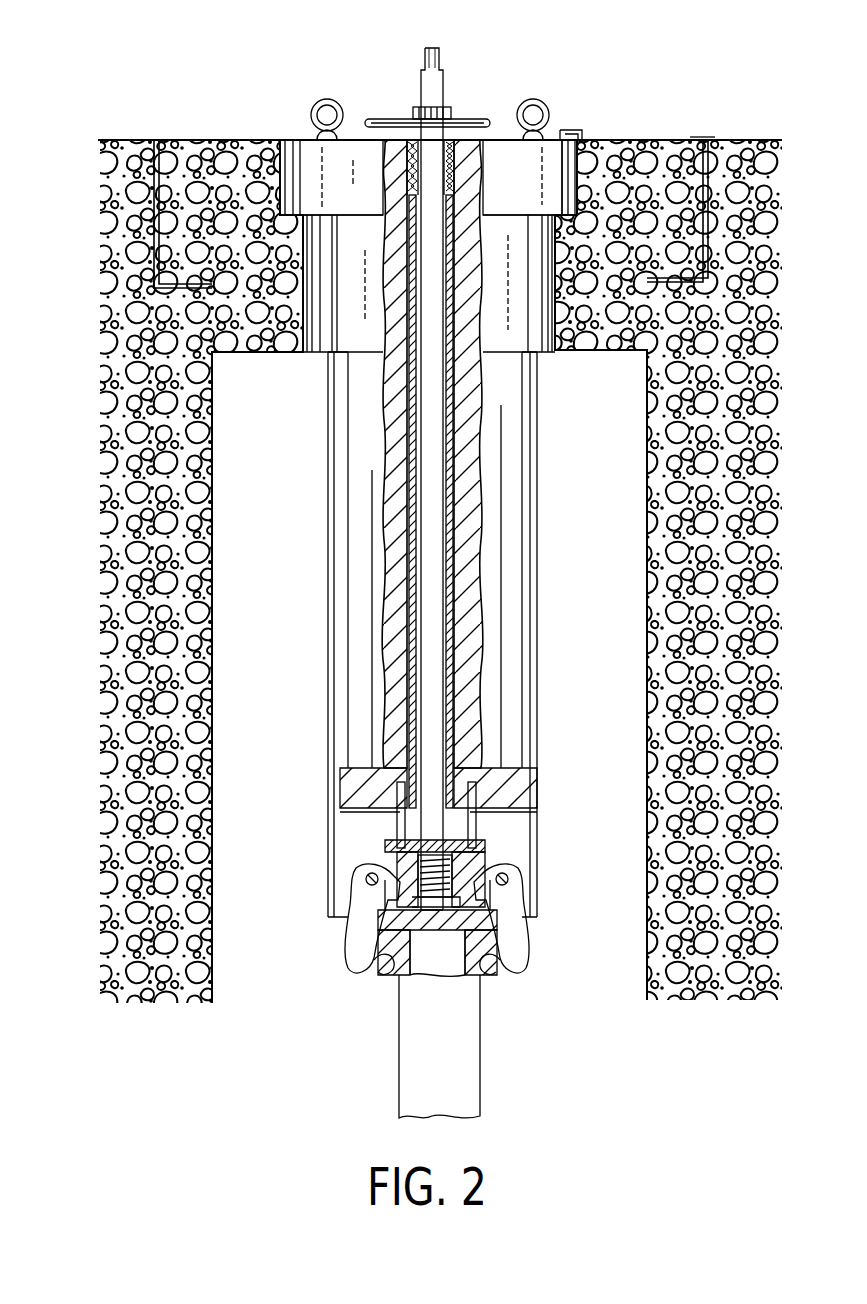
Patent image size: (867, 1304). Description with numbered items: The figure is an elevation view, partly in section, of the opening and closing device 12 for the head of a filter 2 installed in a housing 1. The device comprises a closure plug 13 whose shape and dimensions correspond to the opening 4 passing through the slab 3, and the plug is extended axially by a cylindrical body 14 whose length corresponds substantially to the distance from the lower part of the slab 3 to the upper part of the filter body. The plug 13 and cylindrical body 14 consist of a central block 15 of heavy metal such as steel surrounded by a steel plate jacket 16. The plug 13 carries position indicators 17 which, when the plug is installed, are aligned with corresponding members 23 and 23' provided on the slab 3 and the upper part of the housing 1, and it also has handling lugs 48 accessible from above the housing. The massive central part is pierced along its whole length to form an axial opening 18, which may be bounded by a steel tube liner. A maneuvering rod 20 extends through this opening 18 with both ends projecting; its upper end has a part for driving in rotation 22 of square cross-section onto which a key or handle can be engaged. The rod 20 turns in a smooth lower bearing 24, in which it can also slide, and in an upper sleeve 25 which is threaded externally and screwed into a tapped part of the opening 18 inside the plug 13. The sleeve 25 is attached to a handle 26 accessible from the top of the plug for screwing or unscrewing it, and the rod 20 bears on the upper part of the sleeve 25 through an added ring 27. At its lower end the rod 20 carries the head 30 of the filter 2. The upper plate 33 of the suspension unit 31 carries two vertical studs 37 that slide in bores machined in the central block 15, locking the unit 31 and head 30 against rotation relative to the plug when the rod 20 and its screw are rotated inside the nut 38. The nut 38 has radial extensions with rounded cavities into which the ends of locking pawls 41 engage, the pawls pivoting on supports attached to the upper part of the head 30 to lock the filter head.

The housing 1 is at (652, 470).
The filter 2 is at (473, 1085).
The slab 3 is at (672, 138).
The opening 4 is at (623, 138).
The opening and closing device 12 is at (540, 645).
The closure plug 13 is at (303, 162).
The cylindrical body 14 is at (531, 572).
The central block 15 is at (522, 792).
The steel plate jacket 16 is at (540, 882).
The position indicators 17 is at (570, 128).
The opening 18 is at (467, 448).
The maneuvering rod 20 is at (450, 356).
The part for driving in rotation 22 is at (436, 52).
The corresponding members 23 is at (592, 113).
The plate 23' is at (722, 97).
The smooth lower bearing 24 is at (478, 775).
The upper sleeve 25 is at (448, 177).
The handle 26 is at (380, 121).
The added ring 27 is at (446, 114).
The head 30 is at (488, 945).
The suspension unit 31 is at (373, 854).
The upper plate 33 is at (485, 845).
The vertical studs 37 is at (397, 820).
The nut 38 is at (493, 960).
The locking pawl 41 is at (521, 930).
The handling lugs 48 is at (332, 99).